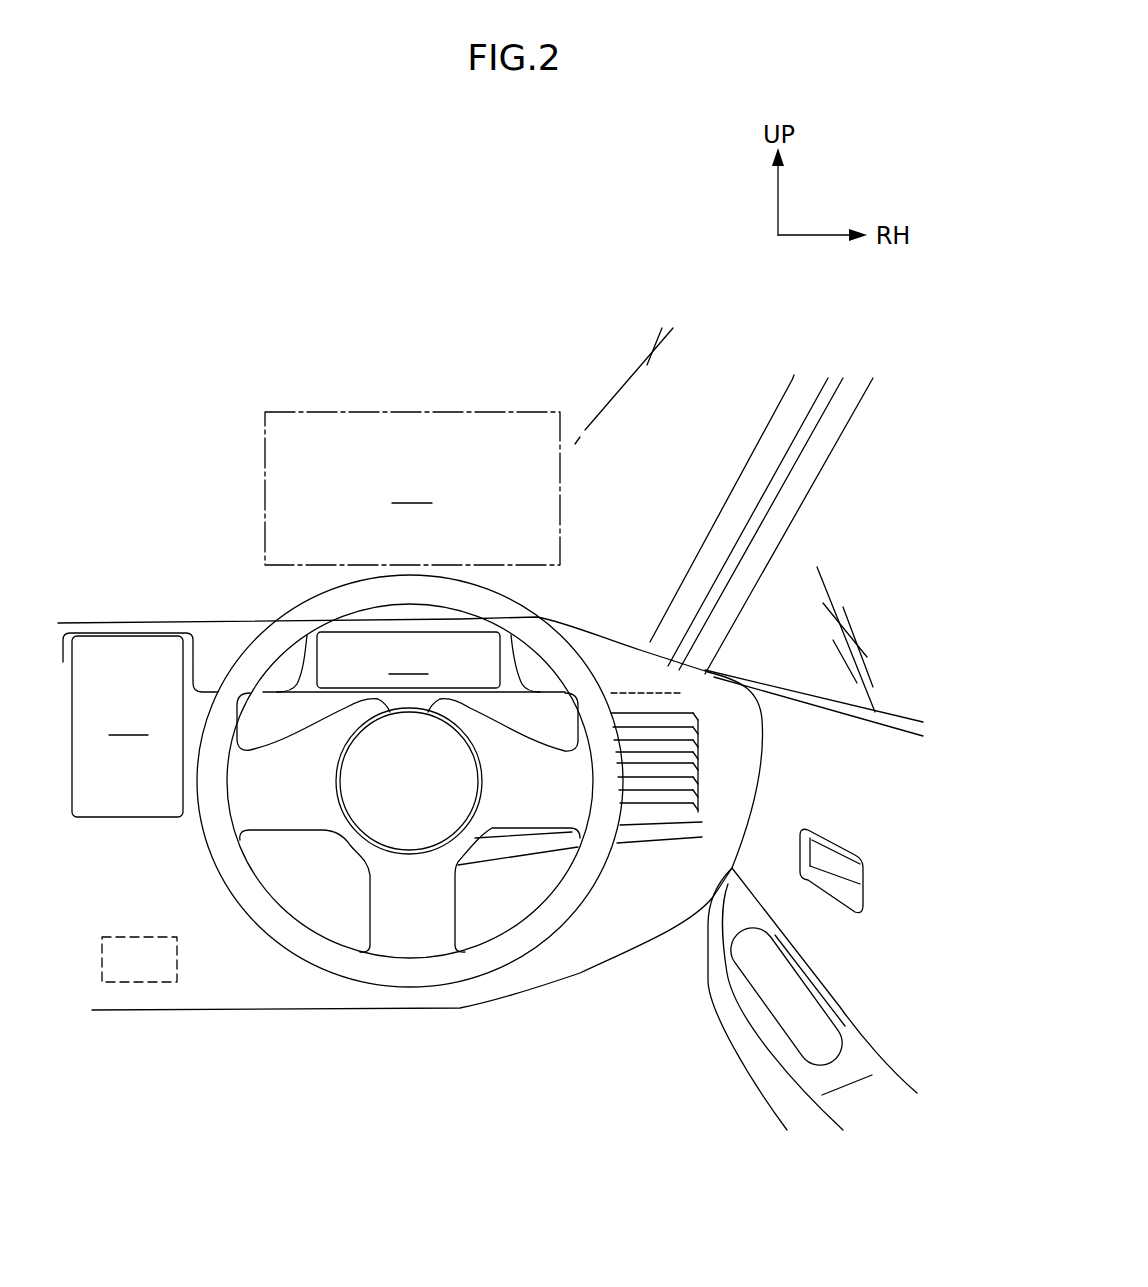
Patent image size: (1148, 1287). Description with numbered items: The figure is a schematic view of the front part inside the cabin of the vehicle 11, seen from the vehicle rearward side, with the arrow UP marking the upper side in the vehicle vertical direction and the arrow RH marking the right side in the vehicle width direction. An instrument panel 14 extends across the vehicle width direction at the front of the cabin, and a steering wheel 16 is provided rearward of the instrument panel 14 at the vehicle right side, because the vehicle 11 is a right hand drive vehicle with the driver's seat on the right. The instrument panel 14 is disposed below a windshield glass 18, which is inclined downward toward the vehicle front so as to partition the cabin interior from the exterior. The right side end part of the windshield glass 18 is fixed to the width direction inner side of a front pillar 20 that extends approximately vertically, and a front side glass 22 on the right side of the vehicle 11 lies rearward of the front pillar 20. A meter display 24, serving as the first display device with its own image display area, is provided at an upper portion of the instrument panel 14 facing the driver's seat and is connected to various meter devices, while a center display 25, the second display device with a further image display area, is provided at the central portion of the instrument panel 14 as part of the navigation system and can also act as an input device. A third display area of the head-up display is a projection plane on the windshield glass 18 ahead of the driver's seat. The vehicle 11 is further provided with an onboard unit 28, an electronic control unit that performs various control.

The vehicle 11 is at (339, 280).
The instrument panel 14 is at (620, 960).
The steering wheel 16 is at (588, 668).
The windshield glass 18 is at (687, 487).
The front pillar 20 is at (770, 418).
The front side glass 22 is at (902, 658).
The meter display 24 is at (360, 663).
The center display 25 is at (142, 795).
The onboard unit 28 is at (153, 982).